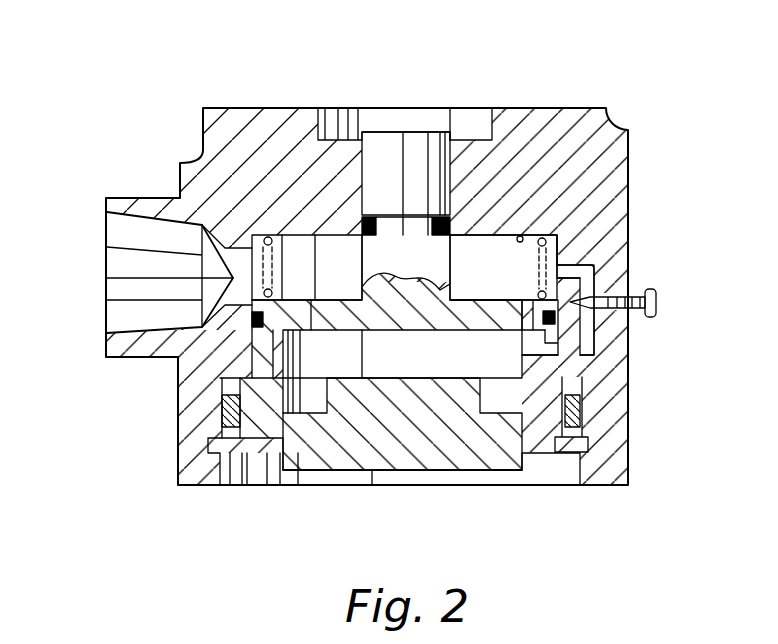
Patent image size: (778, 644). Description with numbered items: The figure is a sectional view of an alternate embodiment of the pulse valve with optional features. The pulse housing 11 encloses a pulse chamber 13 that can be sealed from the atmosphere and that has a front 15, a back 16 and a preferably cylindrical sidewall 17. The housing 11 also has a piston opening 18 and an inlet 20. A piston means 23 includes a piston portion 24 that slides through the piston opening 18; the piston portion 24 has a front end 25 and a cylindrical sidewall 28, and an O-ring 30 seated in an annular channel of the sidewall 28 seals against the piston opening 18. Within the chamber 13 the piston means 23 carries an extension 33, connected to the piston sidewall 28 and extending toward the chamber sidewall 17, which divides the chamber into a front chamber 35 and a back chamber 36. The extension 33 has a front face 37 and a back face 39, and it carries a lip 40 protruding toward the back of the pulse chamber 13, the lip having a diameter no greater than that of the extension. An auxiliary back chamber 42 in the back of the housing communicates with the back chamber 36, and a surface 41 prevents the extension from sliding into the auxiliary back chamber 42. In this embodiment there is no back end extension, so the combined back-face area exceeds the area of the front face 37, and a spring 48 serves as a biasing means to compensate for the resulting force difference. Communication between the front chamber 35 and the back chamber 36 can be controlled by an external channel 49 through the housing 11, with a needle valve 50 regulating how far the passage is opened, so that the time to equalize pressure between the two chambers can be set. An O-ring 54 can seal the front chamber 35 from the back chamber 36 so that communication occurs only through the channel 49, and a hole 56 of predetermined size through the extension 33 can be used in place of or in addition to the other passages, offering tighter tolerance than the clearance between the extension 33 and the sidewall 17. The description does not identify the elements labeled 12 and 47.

The pulse housing 11 is at (628, 352).
The bottom plate 12 is at (290, 487).
The pulse chamber 13 is at (489, 272).
The front 15 is at (521, 236).
The back 16 is at (462, 368).
The sidewall 17 is at (556, 250).
The piston opening 18 is at (378, 157).
The inlet 20 is at (106, 262).
The piston means 23 is at (428, 127).
The piston portion 24 is at (391, 152).
The front end 25 is at (405, 125).
The cylindrical sidewall 28 is at (442, 150).
The O-ring 30 is at (360, 222).
The extension 33 is at (524, 312).
The front chamber 35 is at (311, 272).
The back chamber 36 is at (333, 357).
The front face 37 is at (501, 298).
The back face 39 is at (460, 333).
The lip 40 is at (540, 348).
The surface 41 is at (250, 480).
The auxiliary back chamber 42 is at (320, 403).
The bolt 47 is at (543, 378).
The spring 48 is at (553, 222).
The channel 49 is at (580, 275).
The needle valve 50 is at (657, 299).
The O-ring 54 is at (252, 313).
The hole 56 is at (317, 310).